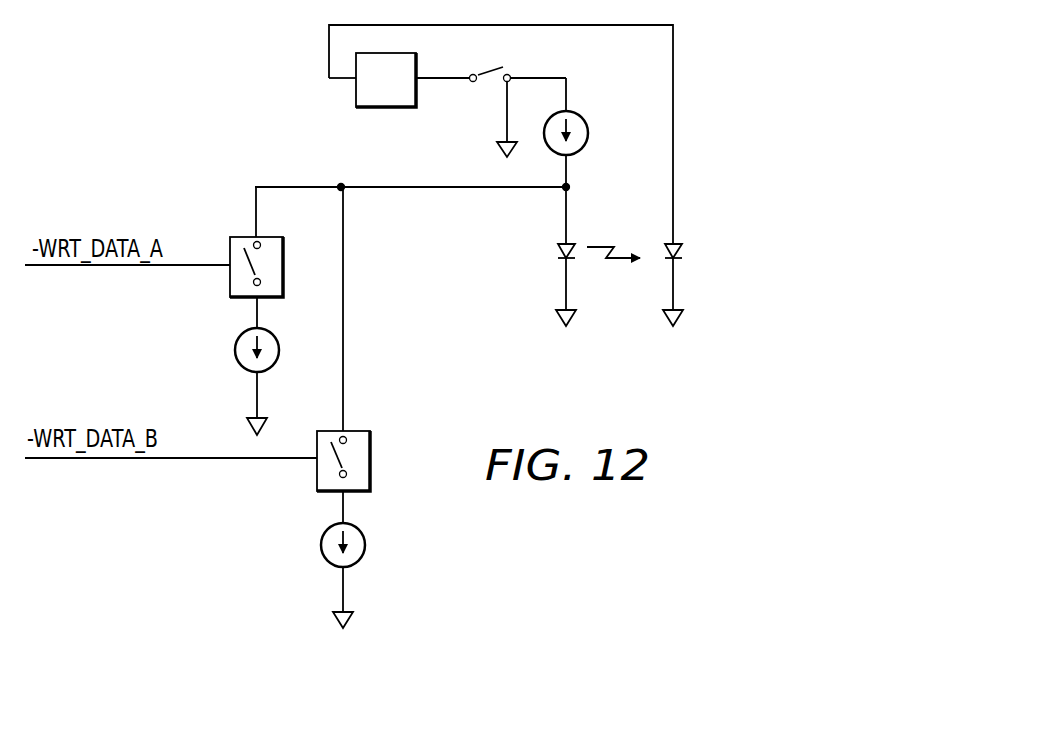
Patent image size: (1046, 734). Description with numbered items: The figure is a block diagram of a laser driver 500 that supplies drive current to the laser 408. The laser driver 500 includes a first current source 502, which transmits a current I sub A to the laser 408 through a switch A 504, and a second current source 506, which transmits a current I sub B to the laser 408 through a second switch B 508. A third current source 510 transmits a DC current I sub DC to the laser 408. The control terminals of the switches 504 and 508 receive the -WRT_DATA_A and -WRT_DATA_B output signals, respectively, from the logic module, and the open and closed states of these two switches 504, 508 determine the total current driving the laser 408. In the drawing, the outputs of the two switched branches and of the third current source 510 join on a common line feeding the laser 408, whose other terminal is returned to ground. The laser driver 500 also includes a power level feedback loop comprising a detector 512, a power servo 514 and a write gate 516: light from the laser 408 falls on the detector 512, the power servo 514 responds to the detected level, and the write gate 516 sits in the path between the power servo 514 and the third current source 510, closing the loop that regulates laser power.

The laser driver 500 is at (153, 117).
The power servo 514 is at (387, 109).
The write gate 516 is at (487, 88).
The third current source 510 is at (580, 114).
The switch A 504 is at (229, 248).
The first current source 502 is at (235, 350).
The second switch B 508 is at (372, 460).
The second current source 506 is at (321, 545).
The laser 408 is at (558, 251).
The detector 512 is at (683, 251).